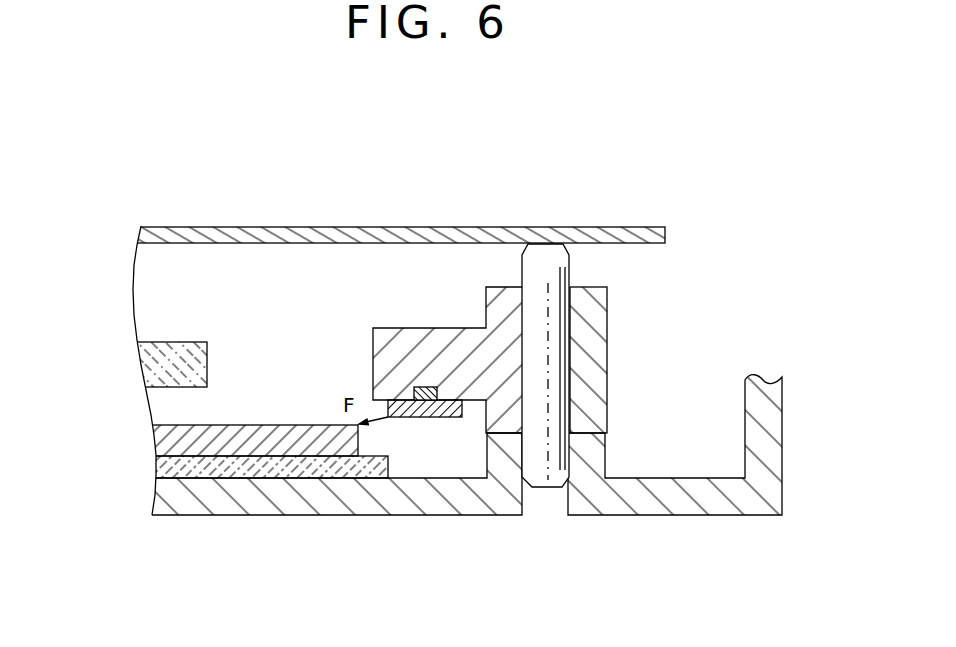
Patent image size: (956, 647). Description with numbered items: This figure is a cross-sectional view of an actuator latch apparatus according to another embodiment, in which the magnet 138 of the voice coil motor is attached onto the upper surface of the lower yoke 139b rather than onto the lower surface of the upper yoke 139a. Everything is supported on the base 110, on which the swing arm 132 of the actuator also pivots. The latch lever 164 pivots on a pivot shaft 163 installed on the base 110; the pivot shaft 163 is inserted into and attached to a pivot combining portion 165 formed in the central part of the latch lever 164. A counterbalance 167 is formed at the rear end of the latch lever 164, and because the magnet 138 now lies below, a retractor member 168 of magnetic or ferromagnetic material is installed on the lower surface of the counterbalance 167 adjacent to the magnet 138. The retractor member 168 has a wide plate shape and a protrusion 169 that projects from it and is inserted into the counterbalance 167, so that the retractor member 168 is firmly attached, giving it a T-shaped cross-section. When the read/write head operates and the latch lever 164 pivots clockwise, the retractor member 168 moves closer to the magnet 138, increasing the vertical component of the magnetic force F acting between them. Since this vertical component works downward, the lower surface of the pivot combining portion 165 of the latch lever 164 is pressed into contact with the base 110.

The base 110 is at (153, 500).
The swing arm 132 is at (150, 368).
The magnet 138 is at (155, 439).
The upper yoke 139a is at (141, 227).
The lower yoke 139b is at (157, 467).
The pivot shaft 163 is at (543, 482).
The latch lever 164 is at (560, 390).
The pivot combining portion 165 is at (595, 388).
The counterbalance 167 is at (433, 332).
The retractor member 168 is at (435, 417).
The protrusion 169 is at (425, 401).